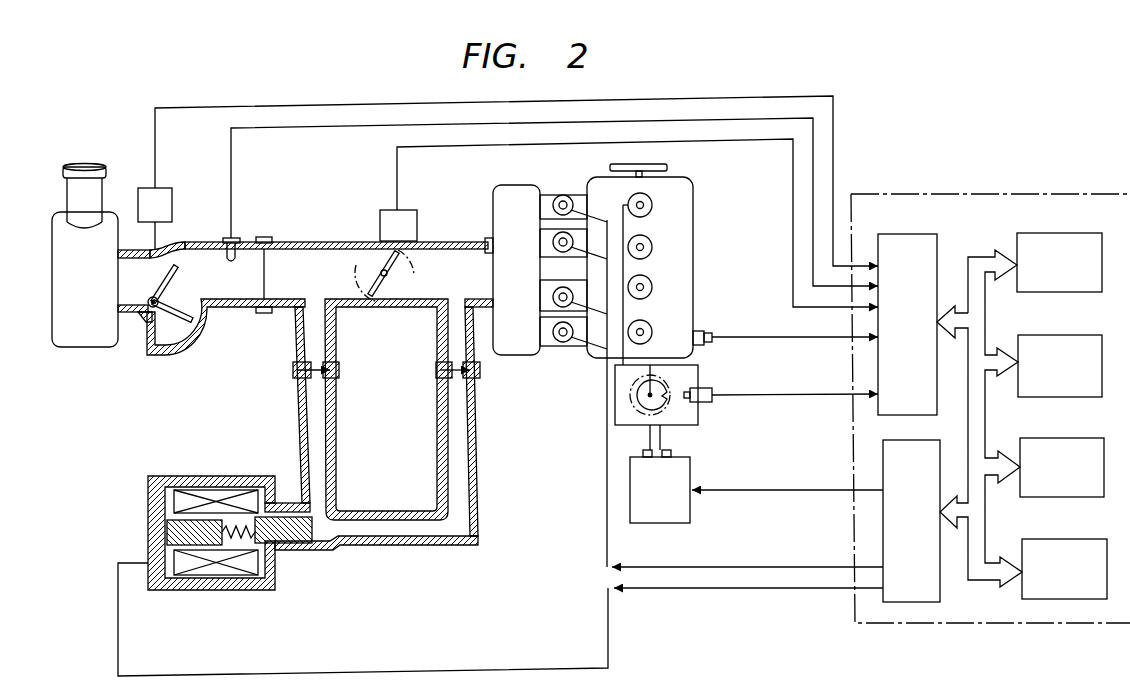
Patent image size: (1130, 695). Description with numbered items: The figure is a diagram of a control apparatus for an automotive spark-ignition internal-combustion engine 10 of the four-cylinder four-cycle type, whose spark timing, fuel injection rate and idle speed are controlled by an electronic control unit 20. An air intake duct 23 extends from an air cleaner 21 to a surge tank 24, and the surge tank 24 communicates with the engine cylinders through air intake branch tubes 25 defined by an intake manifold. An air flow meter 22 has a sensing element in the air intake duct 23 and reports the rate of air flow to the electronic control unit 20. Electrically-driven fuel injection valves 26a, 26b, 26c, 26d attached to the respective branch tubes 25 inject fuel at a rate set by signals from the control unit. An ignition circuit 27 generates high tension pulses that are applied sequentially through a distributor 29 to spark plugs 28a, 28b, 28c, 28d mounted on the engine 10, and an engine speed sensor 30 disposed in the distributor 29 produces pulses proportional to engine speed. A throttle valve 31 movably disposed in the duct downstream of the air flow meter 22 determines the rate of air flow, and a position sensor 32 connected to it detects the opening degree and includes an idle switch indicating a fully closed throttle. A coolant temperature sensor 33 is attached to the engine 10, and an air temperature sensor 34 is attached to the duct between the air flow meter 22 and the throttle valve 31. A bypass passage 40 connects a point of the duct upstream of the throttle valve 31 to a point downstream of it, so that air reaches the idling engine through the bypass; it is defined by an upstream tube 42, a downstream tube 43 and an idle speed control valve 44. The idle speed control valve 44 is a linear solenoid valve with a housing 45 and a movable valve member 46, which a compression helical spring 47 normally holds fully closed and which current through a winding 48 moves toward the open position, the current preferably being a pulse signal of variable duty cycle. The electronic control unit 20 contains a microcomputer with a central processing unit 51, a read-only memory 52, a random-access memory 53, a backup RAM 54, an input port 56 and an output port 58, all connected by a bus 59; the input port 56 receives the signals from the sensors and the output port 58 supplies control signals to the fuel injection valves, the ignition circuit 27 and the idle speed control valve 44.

The internal-combustion engine 10 is at (732, 255).
The electronic control unit 20 is at (990, 385).
The air cleaner 21 is at (80, 347).
The air flow meter 22 is at (172, 205).
The air intake duct 23 is at (304, 242).
The surge tank 24 is at (517, 185).
The air intake branch tubes 25 is at (553, 285).
The fuel injection valve 26a is at (553, 332).
The fuel injection valve 26b is at (553, 297).
The fuel injection valve 26c is at (553, 242).
The fuel injection valve 26d is at (553, 205).
The ignition circuit 27 is at (690, 466).
The spark plug 28a is at (652, 330).
The spark plug 28b is at (652, 287).
The spark plug 28c is at (652, 247).
The spark plug 28d is at (652, 205).
The distributor 29 is at (746, 403).
The engine speed sensor 30 is at (704, 403).
The throttle valve 31 is at (390, 288).
The throttle position sensor 32 is at (417, 226).
The coolant temperature sensor 33 is at (712, 331).
The air temperature sensor 34 is at (233, 238).
The bypass passage 40 is at (390, 508).
The upstream tube 42 is at (300, 388).
The downstream tube 43 is at (478, 428).
The idle speed control valve 44 is at (238, 527).
The housing 45 is at (160, 590).
The valve member 46 is at (297, 543).
The compression helical spring 47 is at (245, 545).
The winding 48 is at (213, 575).
The central processing unit 51 is at (1065, 233).
The read-only memory 52 is at (1061, 335).
The random-access memory 53 is at (1063, 438).
The backup RAM 54 is at (1067, 539).
The input port 56 is at (908, 234).
The output port 58 is at (940, 460).
The bus 59 is at (968, 257).